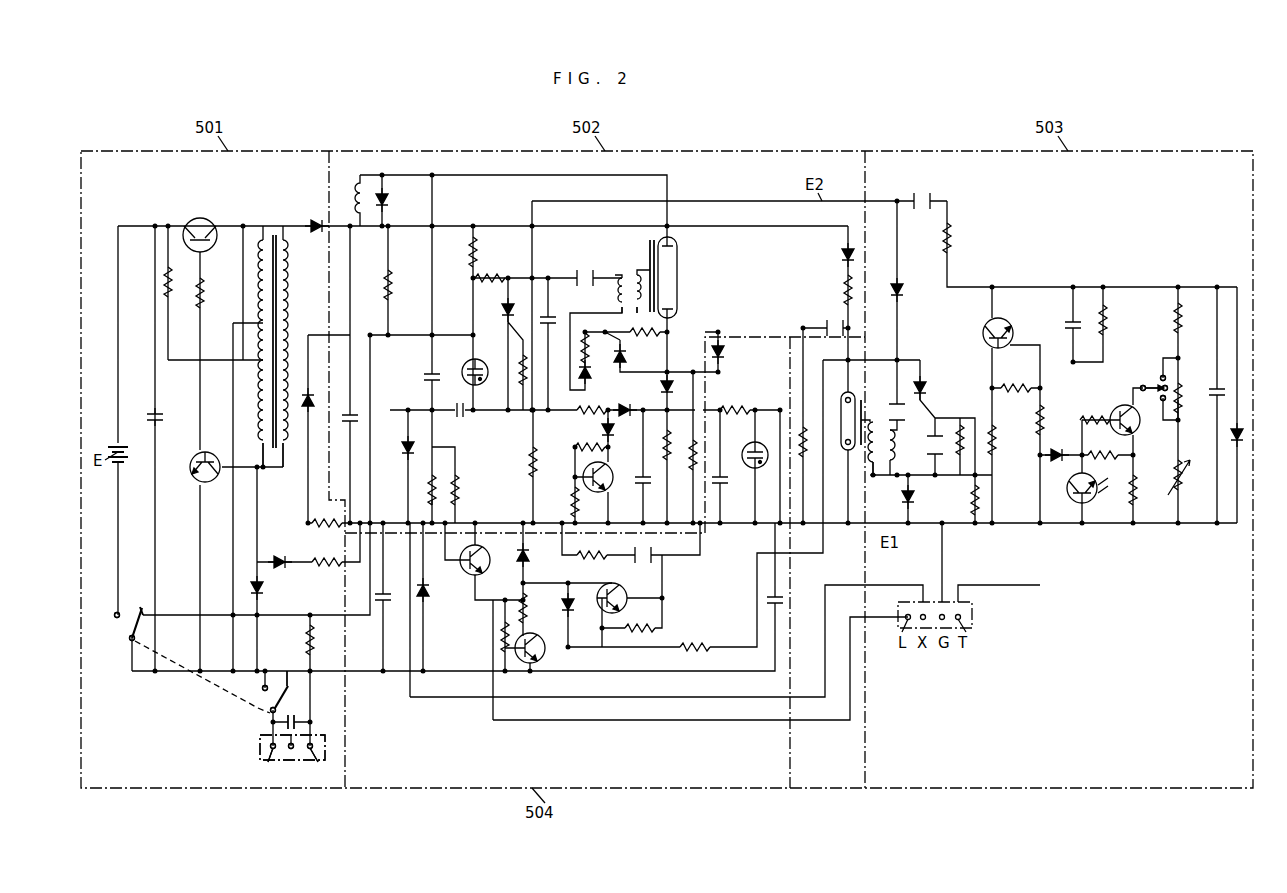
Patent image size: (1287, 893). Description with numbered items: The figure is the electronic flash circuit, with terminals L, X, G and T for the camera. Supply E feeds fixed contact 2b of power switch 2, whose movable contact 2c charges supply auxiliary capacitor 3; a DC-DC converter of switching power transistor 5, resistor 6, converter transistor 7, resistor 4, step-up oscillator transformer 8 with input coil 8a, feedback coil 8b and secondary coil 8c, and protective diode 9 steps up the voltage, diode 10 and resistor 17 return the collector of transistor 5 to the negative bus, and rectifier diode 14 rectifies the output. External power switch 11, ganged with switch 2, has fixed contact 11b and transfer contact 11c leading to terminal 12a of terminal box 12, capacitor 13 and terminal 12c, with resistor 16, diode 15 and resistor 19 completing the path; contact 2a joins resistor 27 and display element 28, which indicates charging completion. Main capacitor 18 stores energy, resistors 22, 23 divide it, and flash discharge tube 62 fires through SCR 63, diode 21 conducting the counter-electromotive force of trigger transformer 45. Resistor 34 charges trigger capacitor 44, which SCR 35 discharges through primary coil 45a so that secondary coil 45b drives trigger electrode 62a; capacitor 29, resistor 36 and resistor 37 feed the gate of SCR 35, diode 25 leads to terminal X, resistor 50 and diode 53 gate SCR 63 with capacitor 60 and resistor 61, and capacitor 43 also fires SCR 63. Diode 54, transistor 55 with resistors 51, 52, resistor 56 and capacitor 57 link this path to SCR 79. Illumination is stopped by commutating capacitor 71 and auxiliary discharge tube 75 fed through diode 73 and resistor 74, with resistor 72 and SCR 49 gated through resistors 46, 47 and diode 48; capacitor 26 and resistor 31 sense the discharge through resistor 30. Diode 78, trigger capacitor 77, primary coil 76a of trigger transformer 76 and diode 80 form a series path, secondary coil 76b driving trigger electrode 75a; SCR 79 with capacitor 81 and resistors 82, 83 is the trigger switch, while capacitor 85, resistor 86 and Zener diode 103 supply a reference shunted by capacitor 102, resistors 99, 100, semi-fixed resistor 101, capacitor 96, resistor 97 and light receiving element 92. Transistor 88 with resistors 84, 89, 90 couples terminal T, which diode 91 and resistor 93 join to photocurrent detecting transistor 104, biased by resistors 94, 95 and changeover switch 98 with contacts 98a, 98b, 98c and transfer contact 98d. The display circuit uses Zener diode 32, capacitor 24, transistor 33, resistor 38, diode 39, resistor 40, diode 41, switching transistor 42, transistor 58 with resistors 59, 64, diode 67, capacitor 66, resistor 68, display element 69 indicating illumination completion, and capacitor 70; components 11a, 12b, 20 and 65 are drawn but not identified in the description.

The power switch 2 is at (128, 630).
The fixed contact 2a is at (142, 612).
The fixed contact 2b is at (114, 615).
The movable contact 2c is at (130, 642).
The supply auxiliary capacitor 3 is at (147, 414).
The resistor 4 is at (172, 278).
The switching power transistor 5 is at (197, 222).
The resistor 6 is at (205, 289).
The converter transistor 7 is at (190, 467).
The step-up oscillator transformer 8 is at (274, 226).
The input coil 8a is at (262, 236).
The feedback coil 8b is at (265, 470).
The secondary coil 8c is at (288, 280).
The diode 9 is at (264, 592).
The diode 10 is at (280, 556).
The external power switch 11 is at (284, 695).
The switch contact 11a is at (287, 680).
The fixed contact 11b is at (262, 688).
The transfer contact 11c is at (270, 712).
The terminal box 12 is at (258, 752).
The terminal 12a is at (269, 762).
The connector terminal 12b is at (291, 750).
The terminal 12c is at (318, 762).
The capacitor 13 is at (300, 718).
The rectifier diode 14 is at (317, 218).
The diode 15 is at (310, 410).
The resistor 16 is at (306, 640).
The resistor 17 is at (327, 567).
The main capacitor 18 is at (349, 425).
The resistor 19 is at (327, 528).
The inductor 20 is at (357, 190).
The diode 21 is at (388, 198).
The resistor 22 is at (393, 287).
The resistor 23 is at (431, 478).
The capacitor 24 is at (386, 590).
The diode 25 is at (415, 440).
The capacitor 26 is at (424, 373).
The resistor 27 is at (468, 254).
The display element 28 is at (464, 364).
The capacitor 29 is at (459, 418).
The resistor 30 is at (460, 495).
The resistor 31 is at (430, 503).
The Zener diode 32 is at (429, 593).
The transistor 33 is at (462, 565).
The resistor 34 is at (490, 274).
The SCR 35 is at (503, 318).
The resistor 36 is at (517, 368).
The resistor 37 is at (528, 462).
The resistor 38 is at (500, 639).
The diode 39 is at (527, 560).
The resistor 40 is at (562, 612).
The diode 41 is at (532, 612).
The switching transistor 42 is at (538, 662).
The capacitor 43 is at (542, 321).
The trigger capacitor 44 is at (585, 272).
The trigger transformer 45 is at (628, 284).
The primary coil 45a is at (618, 308).
The secondary coil 45b is at (637, 290).
The resistor 46 is at (660, 333).
The resistor 47 is at (583, 352).
The diode 48 is at (590, 375).
The SCR 49 is at (626, 358).
The resistor 50 is at (585, 415).
The resistor 51 is at (585, 452).
The resistor 52 is at (578, 500).
The diode 53 is at (618, 405).
The diode 54 is at (614, 431).
The transistor 55 is at (608, 470).
The resistor 56 is at (590, 553).
The capacitor 57 is at (645, 553).
The transistor 58 is at (620, 590).
The resistor 59 is at (634, 628).
The capacitor 60 is at (640, 488).
The resistor 61 is at (669, 443).
The flash discharge tube 62 is at (677, 280).
The trigger electrode 62a is at (650, 245).
The SCR 63 is at (660, 390).
The resistor 64 is at (690, 470).
The resistor 65 is at (692, 645).
The capacitor 66 is at (724, 490).
The diode 67 is at (724, 354).
The resistor 68 is at (737, 403).
The display element 69 is at (745, 450).
The capacitor 70 is at (784, 596).
The commutating capacitor 71 is at (826, 324).
The resistor 72 is at (800, 425).
The diode 73 is at (842, 256).
The resistor 74 is at (843, 290).
The auxiliary discharge tube 75 is at (845, 400).
The trigger electrode 75a is at (862, 400).
The trigger transformer 76 is at (876, 420).
The primary coil 76a is at (873, 476).
The secondary coil 76b is at (875, 478).
The trigger capacitor 77 is at (894, 437).
The diode 78 is at (902, 289).
The SCR 79 is at (934, 388).
The diode 80 is at (914, 500).
The capacitor 81 is at (935, 478).
The resistor 82 is at (960, 428).
The resistor 83 is at (979, 503).
The resistor 84 is at (997, 441).
The capacitor 85 is at (922, 192).
The resistor 86 is at (952, 237).
The transistor 88 is at (983, 328).
The resistor 89 is at (1016, 384).
The resistor 90 is at (1035, 420).
The diode 91 is at (1057, 464).
The light receiving element 92 is at (1070, 498).
The resistor 93 is at (1104, 462).
The resistor 94 is at (1136, 484).
The resistor 95 is at (1095, 416).
The capacitor 96 is at (1065, 326).
The resistor 97 is at (1108, 318).
The changeover switch 98 is at (1162, 385).
The fixed contact 98a is at (1162, 375).
The fixed contact 98b is at (1180, 408).
The fixed contact 98c is at (1163, 402).
The transfer contact 98d is at (1140, 388).
The resistor 99 is at (1183, 318).
The resistor 100 is at (1181, 388).
The semi-fixed resistor 101 is at (1170, 485).
The capacitor 102 is at (1218, 400).
The Zener diode 103 is at (1232, 440).
The photocurrent detecting transistor 104 is at (1115, 426).